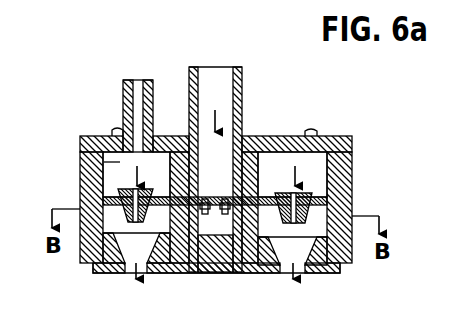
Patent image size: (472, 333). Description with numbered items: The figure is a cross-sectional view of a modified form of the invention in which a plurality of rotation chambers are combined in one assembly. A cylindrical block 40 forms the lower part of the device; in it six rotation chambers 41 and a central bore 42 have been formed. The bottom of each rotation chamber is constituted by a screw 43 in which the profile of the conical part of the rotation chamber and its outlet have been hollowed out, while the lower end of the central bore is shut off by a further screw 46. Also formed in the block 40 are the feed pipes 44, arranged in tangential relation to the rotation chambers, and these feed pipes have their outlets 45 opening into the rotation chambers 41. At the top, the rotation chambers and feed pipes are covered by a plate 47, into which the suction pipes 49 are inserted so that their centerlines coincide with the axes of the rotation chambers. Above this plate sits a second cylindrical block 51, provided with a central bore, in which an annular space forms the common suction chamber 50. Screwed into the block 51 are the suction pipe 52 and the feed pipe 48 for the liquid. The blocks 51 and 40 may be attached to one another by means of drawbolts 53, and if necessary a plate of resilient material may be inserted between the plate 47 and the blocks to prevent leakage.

The cylindrical block 40 is at (88, 237).
The rotation chambers 41 is at (110, 213).
The central bore 42 is at (237, 262).
The screw 43 is at (107, 267).
The feed pipes 44 is at (205, 216).
The outlets 45 is at (160, 214).
The screw 46 is at (210, 270).
The plate 47 is at (118, 197).
The feed pipe 48 is at (243, 100).
The suction pipes 49 is at (104, 162).
The common suction chamber 50 is at (112, 151).
The cylindrical block 51 is at (113, 131).
The suction pipe 52 is at (123, 97).
The drawbolts 53 is at (314, 132).